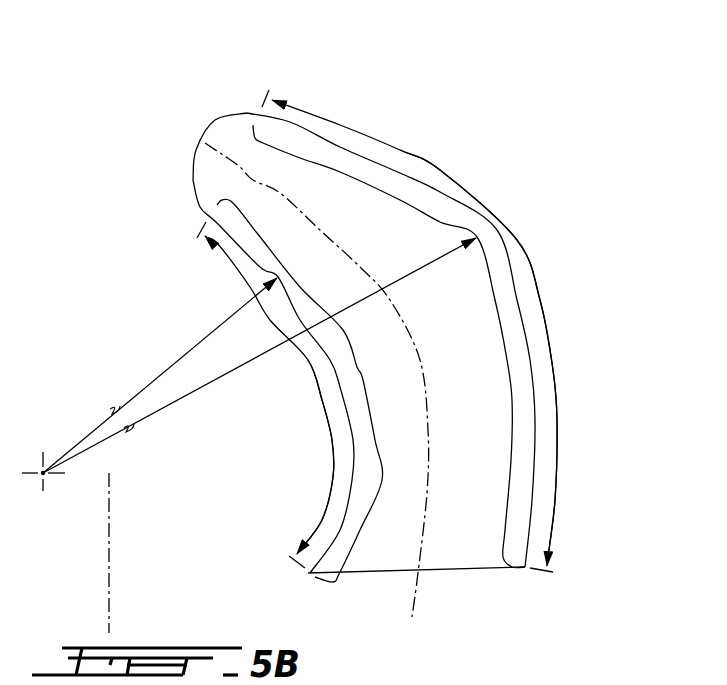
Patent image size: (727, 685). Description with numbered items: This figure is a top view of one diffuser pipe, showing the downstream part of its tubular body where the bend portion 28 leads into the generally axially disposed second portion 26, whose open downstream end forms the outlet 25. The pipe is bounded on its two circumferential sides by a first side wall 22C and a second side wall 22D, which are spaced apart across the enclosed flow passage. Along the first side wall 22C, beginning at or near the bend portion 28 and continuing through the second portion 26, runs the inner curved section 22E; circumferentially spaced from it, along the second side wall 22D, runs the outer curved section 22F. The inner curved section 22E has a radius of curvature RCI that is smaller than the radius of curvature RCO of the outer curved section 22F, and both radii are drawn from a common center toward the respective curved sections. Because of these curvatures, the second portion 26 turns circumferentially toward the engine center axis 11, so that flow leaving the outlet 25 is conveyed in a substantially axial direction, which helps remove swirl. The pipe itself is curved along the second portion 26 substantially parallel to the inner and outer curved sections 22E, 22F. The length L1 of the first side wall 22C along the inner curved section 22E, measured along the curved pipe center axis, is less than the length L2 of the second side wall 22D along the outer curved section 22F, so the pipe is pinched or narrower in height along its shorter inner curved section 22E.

The bend portion 28 is at (216, 123).
The second portion 26 is at (276, 213).
The first side wall 22C is at (352, 481).
The second side wall 22D is at (537, 380).
The inner curved section 22E is at (358, 368).
The outer curved section 22F is at (489, 289).
The outlet 25 is at (478, 583).
The engine center axis 11 is at (110, 565).
The length of the first side wall L1 is at (265, 395).
The length of the second side wall L2 is at (409, 331).
The radius of curvature of the inner curved section RCI is at (149, 384).
The radius of curvature of the outer curved section RCO is at (259, 355).